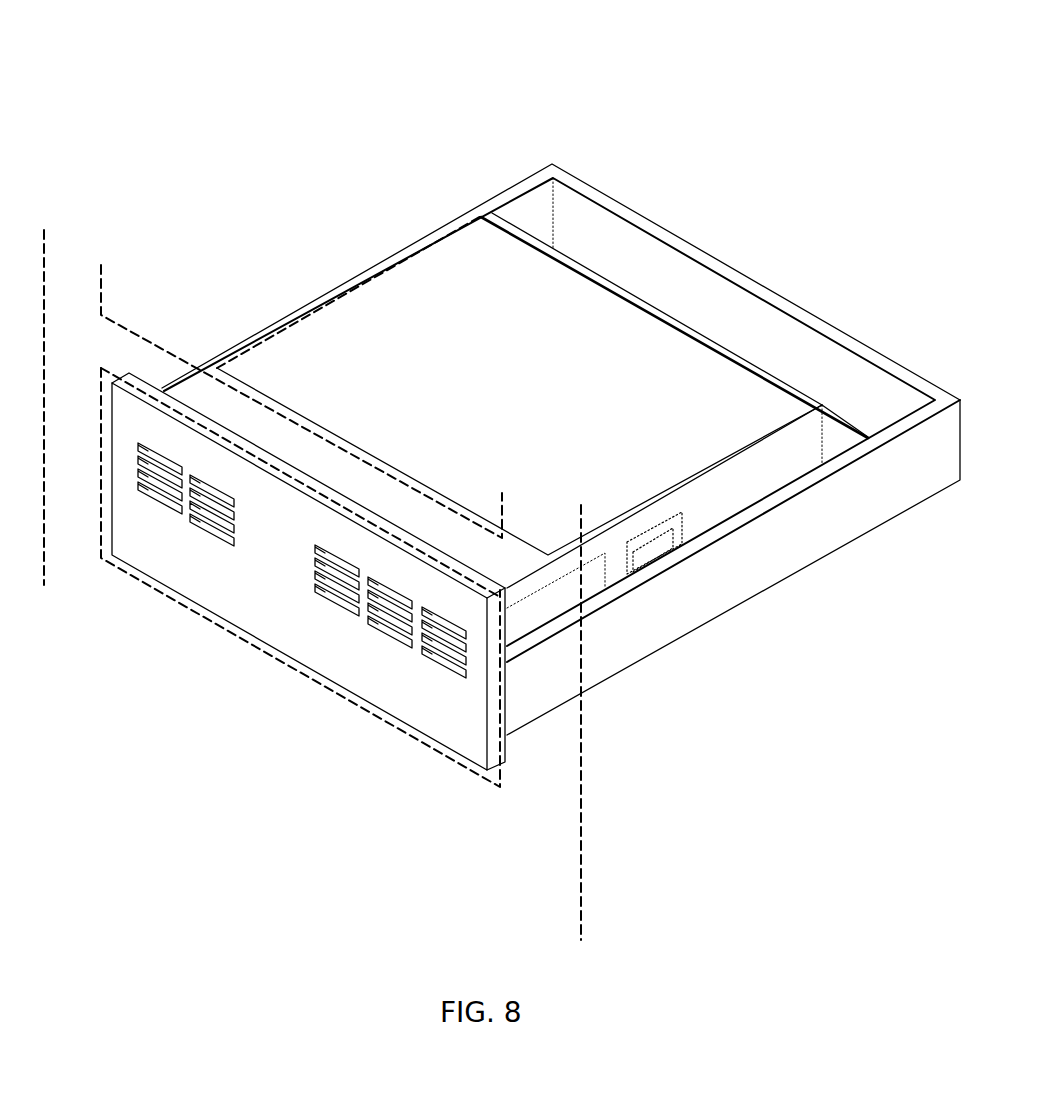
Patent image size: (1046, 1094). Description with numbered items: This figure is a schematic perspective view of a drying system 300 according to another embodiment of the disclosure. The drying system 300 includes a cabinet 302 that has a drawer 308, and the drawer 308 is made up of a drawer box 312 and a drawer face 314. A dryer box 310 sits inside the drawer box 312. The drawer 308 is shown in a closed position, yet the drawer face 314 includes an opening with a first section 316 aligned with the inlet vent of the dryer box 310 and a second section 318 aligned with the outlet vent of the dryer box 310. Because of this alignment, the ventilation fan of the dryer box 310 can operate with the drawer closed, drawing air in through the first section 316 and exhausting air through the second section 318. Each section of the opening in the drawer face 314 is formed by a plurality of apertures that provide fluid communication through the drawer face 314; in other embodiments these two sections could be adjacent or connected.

The drying system 300 is at (278, 123).
The cabinet 302 is at (588, 750).
The drawer 308 is at (746, 576).
The dryer box 310 is at (581, 309).
The drawer box 312 is at (635, 632).
The drawer face 314 is at (268, 588).
The first section 316 is at (155, 528).
The second section 318 is at (376, 651).